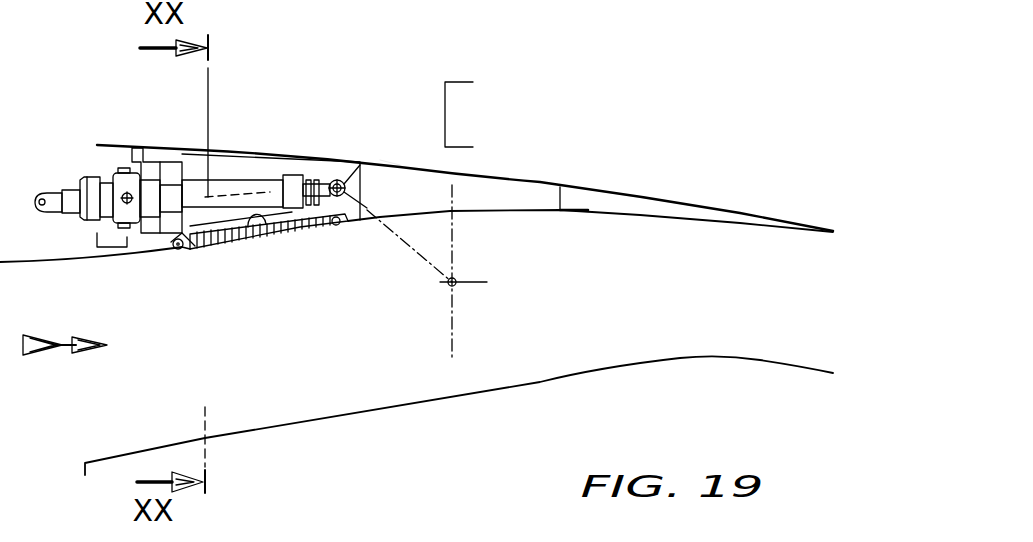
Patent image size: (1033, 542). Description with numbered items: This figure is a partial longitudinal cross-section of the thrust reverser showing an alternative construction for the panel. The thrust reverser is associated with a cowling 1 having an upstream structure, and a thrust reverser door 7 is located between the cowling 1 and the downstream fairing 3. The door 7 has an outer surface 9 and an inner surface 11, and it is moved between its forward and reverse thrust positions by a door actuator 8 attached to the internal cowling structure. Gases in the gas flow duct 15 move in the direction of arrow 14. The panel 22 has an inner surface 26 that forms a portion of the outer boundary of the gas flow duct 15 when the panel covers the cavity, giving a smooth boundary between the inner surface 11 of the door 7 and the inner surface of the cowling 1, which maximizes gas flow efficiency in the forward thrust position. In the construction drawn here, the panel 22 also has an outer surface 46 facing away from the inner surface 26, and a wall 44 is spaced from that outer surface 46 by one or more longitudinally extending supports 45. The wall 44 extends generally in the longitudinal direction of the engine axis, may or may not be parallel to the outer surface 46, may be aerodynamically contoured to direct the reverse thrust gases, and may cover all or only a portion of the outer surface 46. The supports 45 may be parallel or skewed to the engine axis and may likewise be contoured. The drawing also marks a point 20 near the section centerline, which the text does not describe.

The cowling 1 is at (108, 146).
The downstream fairing 3 is at (637, 197).
The thrust reverser door 7 is at (392, 165).
The door actuator 8 is at (235, 190).
The outer surface 9 is at (537, 177).
The inner surface 11 is at (493, 213).
The arrow 14 is at (65, 370).
The gas flow duct 15 is at (707, 280).
The pivot axis 20 is at (457, 278).
The panel 22 is at (198, 248).
The inner surface 26 is at (278, 238).
The wall 44 is at (232, 241).
The supports 45 is at (291, 235).
The outer surface 46 is at (272, 240).